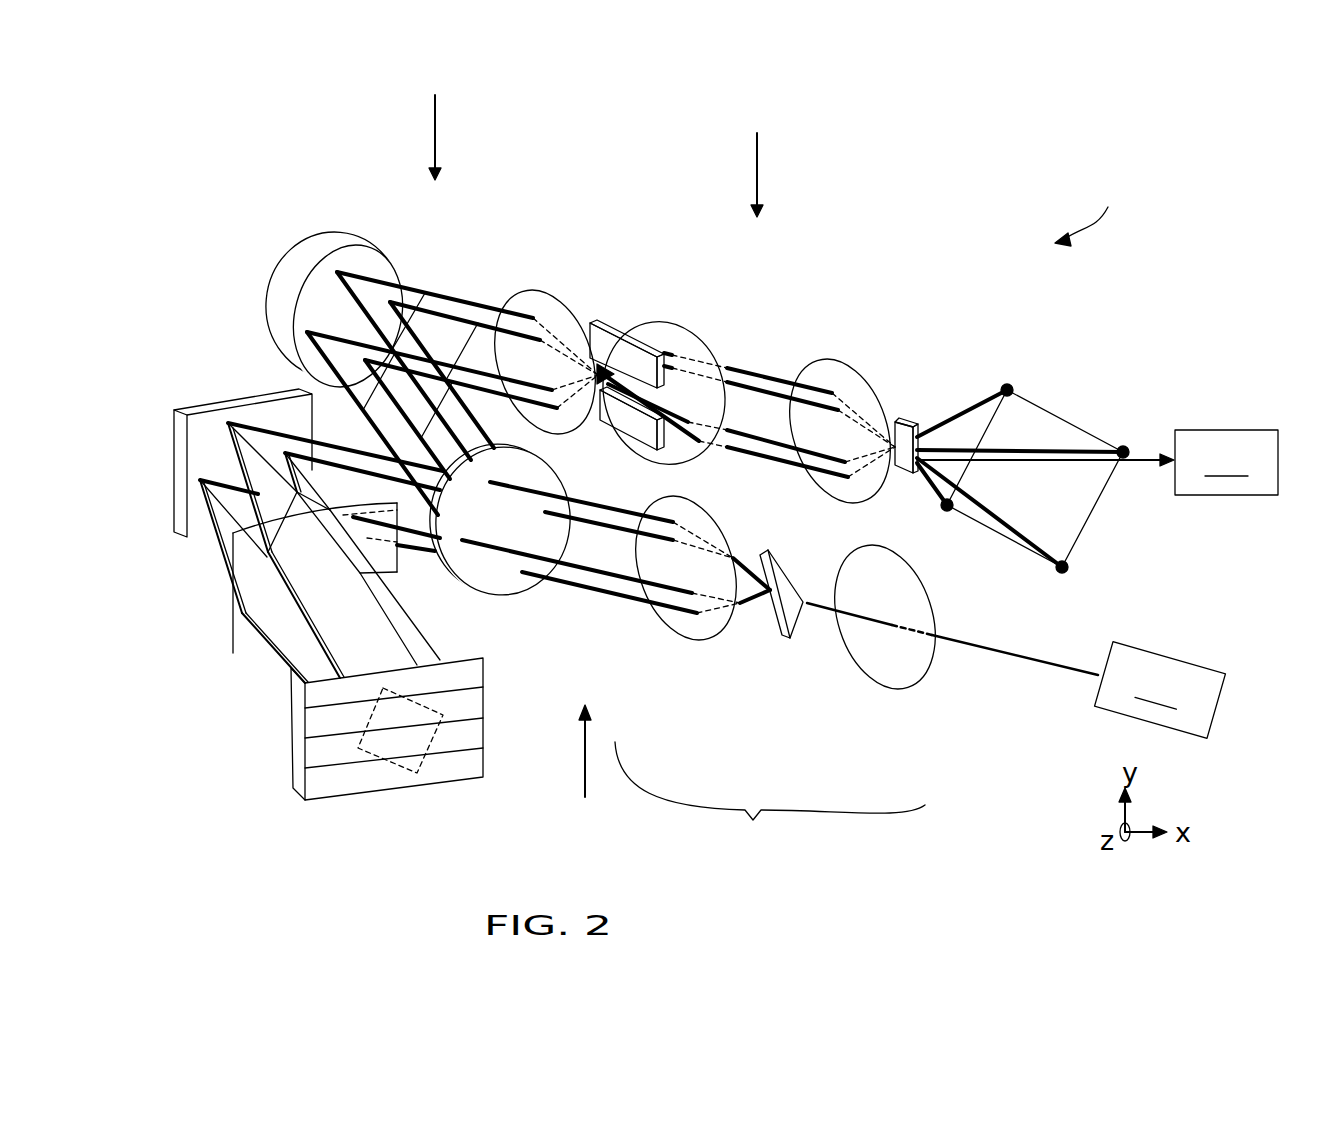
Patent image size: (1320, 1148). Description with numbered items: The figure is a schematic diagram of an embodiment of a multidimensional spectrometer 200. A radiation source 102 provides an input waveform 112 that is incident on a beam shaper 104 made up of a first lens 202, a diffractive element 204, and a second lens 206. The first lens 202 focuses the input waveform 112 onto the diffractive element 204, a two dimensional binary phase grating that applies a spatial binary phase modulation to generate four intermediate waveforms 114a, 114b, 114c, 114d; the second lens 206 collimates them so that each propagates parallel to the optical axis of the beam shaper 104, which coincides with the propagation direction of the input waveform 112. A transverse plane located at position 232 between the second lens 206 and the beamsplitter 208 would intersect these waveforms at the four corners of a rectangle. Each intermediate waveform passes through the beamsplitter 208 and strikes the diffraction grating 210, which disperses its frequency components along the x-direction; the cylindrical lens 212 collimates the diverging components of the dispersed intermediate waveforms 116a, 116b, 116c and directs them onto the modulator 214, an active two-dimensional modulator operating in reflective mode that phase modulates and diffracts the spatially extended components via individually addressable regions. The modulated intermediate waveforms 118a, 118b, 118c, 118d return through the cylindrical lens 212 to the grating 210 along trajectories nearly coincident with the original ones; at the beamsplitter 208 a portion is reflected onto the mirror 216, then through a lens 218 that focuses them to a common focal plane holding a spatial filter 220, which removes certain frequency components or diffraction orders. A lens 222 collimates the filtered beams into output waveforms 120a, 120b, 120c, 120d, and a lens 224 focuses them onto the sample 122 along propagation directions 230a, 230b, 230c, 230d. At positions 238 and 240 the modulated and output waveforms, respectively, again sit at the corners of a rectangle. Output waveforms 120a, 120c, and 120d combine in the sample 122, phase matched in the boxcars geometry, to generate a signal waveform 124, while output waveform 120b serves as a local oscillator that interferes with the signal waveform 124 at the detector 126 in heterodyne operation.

The radiation source 102 is at (1160, 690).
The beam shaper 104 is at (770, 792).
The input waveform 112 is at (1002, 653).
The intermediate waveform 114a is at (578, 500).
The intermediate waveform 114b is at (612, 527).
The intermediate waveform 114c is at (563, 583).
The intermediate waveform 114d is at (591, 589).
The dispersed intermediate waveform 116a is at (313, 588).
The dispersed intermediate waveform 116b is at (420, 633).
The dispersed intermediate waveform 116c is at (280, 660).
The modulated intermediate waveform 118a is at (421, 292).
The modulated intermediate waveform 118b is at (448, 312).
The modulated intermediate waveform 118c is at (307, 390).
The modulated intermediate waveform 118d is at (278, 393).
The output waveform 120a is at (813, 462).
The output waveform 120b is at (755, 455).
The output waveform 120c is at (745, 380).
The output waveform 120d is at (755, 383).
The sample 122 is at (912, 413).
The signal waveform 124 is at (1073, 465).
The detector 126 is at (1226, 462).
The multidimensional spectrometer 200 is at (1101, 210).
The first lens 202 is at (871, 680).
The diffractive element 204 is at (765, 640).
The second lens 206 is at (680, 630).
The beamsplitter 208 is at (464, 568).
The diffraction grating 210 is at (174, 458).
The cylindrical lens 212 is at (277, 660).
The modulator 214 is at (305, 778).
The mirror 216 is at (306, 258).
The lens 218 is at (522, 302).
The spatial filter 220 is at (608, 347).
The lens 222 is at (652, 335).
The lens 224 is at (828, 372).
The propagation direction 230a is at (956, 413).
The propagation direction 230b is at (1047, 452).
The propagation direction 230c is at (930, 487).
The propagation direction 230d is at (1002, 527).
The position 232 is at (584, 765).
The position 238 is at (436, 121).
The position 240 is at (756, 158).